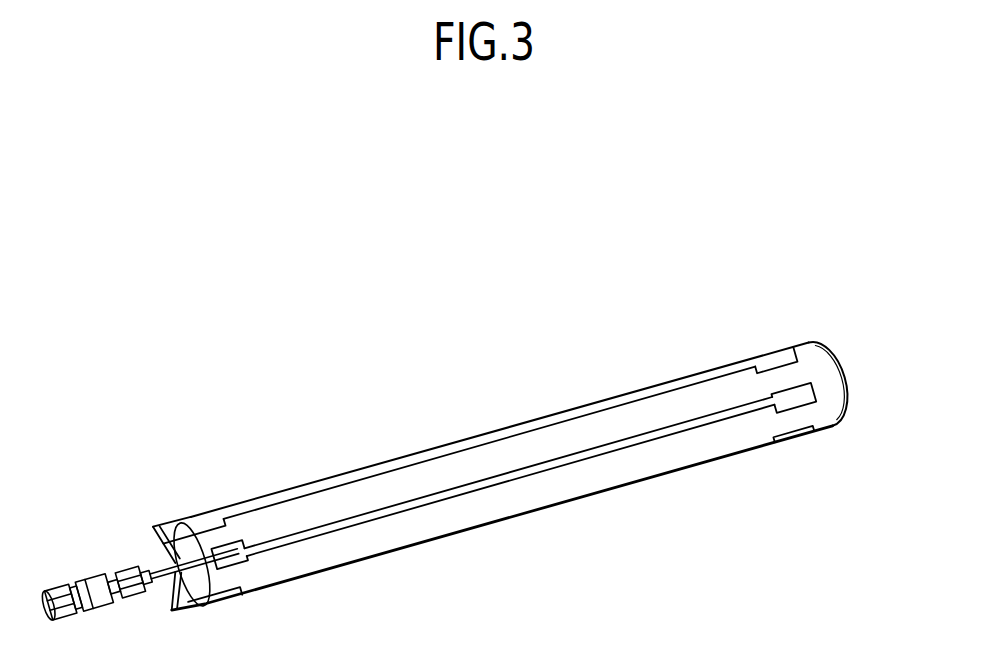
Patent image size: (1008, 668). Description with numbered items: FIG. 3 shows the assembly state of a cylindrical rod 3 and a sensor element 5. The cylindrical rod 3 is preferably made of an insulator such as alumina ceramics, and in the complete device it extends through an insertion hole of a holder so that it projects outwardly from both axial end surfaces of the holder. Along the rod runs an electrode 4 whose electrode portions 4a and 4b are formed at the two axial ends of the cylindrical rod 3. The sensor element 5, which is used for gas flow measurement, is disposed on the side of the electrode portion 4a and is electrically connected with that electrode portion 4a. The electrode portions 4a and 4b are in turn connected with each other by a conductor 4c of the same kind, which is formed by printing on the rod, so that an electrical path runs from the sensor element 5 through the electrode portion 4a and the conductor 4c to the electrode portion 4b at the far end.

The cylindrical rod 3 is at (836, 394).
The electrode 4 is at (490, 452).
The electrode portion 4a is at (200, 532).
The electrode portion 4b is at (771, 365).
The conductor 4c is at (507, 478).
The sensor element 5 is at (94, 574).